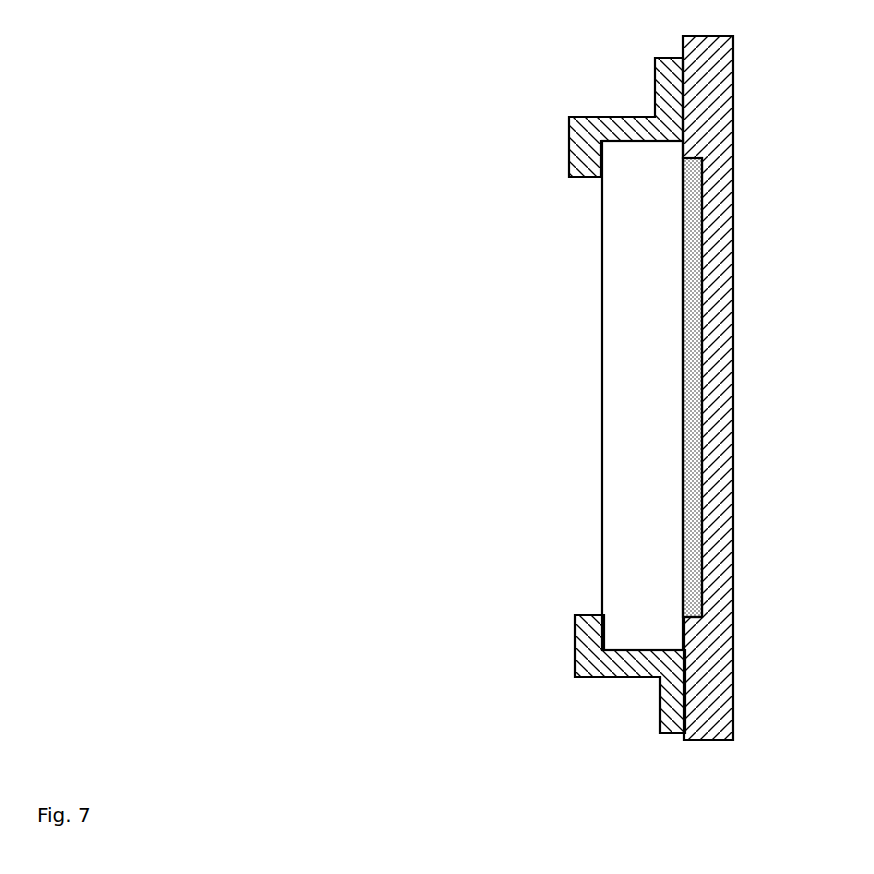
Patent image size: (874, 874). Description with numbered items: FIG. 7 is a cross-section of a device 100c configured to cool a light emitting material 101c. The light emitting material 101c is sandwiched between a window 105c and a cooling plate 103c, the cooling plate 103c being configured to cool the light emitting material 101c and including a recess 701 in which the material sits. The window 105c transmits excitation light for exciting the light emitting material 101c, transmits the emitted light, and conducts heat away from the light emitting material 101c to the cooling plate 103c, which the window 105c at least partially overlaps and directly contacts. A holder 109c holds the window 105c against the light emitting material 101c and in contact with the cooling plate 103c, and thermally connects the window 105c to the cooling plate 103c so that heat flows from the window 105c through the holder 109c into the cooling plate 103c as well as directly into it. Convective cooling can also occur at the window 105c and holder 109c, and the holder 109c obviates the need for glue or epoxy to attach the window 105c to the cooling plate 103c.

The device 100c is at (540, 705).
The cooling plate 103c is at (718, 65).
The light emitting material 101c is at (697, 483).
The window 105c is at (615, 388).
The holder 109c is at (560, 166).
The recess 701 is at (720, 614).